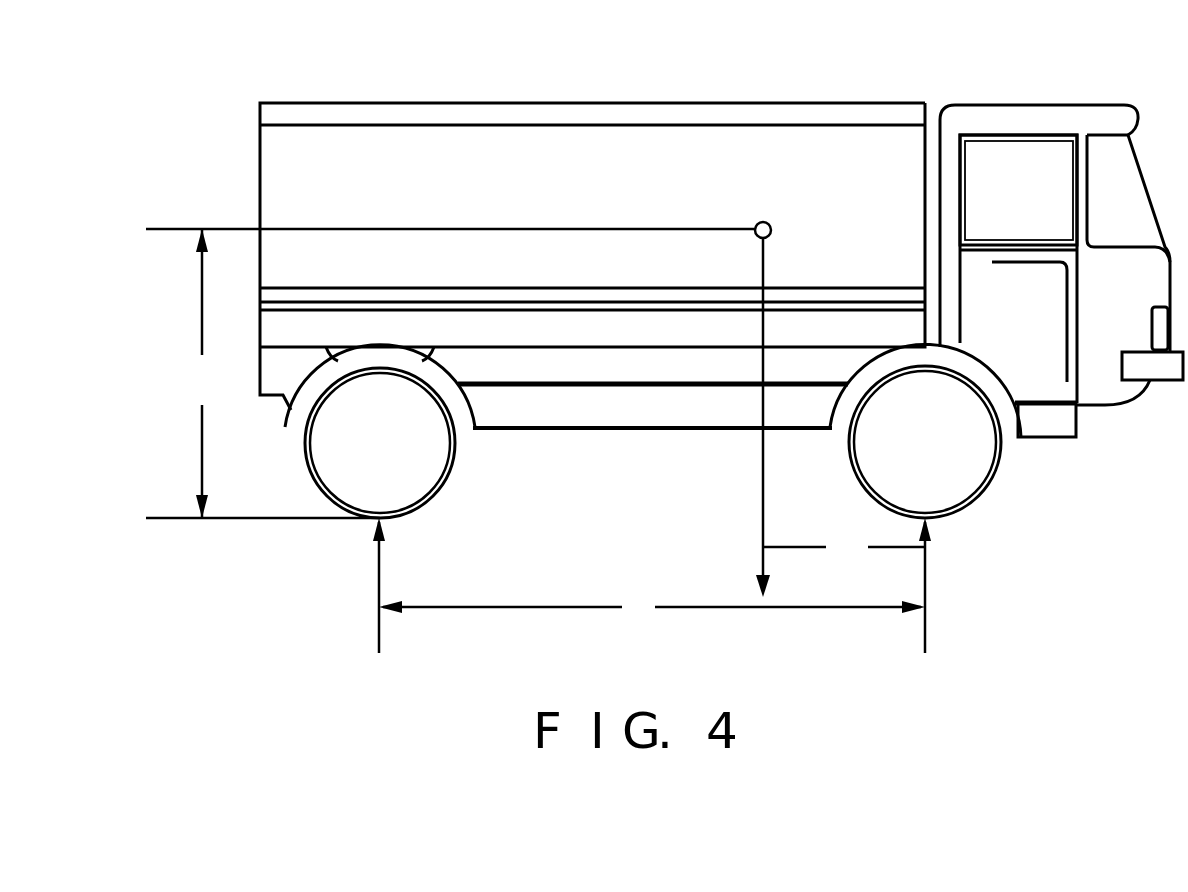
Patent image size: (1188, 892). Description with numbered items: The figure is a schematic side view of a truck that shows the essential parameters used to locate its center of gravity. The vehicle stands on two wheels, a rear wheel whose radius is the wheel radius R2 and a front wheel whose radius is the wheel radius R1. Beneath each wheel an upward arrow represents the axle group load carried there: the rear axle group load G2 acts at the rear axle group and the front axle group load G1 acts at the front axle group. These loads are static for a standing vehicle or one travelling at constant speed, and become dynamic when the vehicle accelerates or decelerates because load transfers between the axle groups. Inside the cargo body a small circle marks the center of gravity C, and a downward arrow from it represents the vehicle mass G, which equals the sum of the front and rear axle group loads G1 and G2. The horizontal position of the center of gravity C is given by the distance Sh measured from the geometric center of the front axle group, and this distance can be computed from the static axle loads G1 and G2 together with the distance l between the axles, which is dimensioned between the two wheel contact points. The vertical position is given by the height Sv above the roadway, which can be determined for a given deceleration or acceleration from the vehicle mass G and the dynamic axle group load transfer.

The front wheel radius R1 is at (873, 466).
The rear wheel radius R2 is at (326, 461).
The center of gravity C is at (757, 215).
The vehicle mass G is at (791, 417).
The front axle group load G1 is at (952, 585).
The rear axle group load G2 is at (350, 585).
The height of center of gravity Sv is at (450, 373).
The horizontal distance of center of gravity Sh is at (844, 556).
The distance between axles l is at (652, 605).